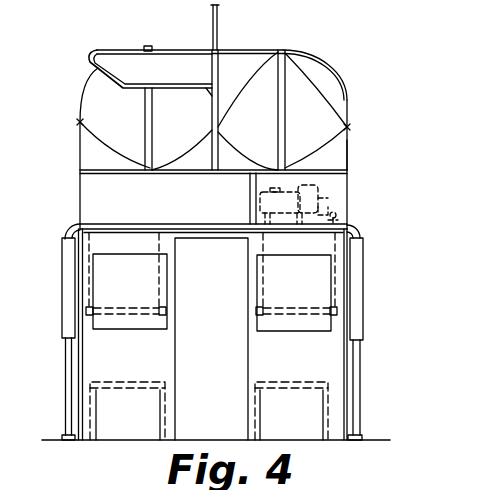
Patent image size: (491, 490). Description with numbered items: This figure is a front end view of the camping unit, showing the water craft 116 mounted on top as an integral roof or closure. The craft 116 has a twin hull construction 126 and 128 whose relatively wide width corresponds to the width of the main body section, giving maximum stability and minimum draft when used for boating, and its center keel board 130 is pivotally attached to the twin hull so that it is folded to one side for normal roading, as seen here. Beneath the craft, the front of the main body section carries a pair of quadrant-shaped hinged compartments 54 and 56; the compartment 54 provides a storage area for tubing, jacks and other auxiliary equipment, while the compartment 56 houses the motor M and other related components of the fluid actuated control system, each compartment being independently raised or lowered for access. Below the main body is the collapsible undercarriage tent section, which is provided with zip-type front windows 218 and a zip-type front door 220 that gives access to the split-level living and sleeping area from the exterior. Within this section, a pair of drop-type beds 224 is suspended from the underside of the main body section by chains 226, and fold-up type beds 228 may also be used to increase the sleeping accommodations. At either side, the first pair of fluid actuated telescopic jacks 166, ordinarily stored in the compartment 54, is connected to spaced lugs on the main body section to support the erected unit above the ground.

The water craft 116 is at (349, 72).
The twin hull 126 is at (82, 123).
The twin hull 128 is at (318, 133).
The center keel board 130 is at (211, 24).
The compartment 56 is at (333, 158).
The compartment 54 is at (88, 188).
The motor M is at (328, 198).
The front door 220 is at (223, 370).
The chains 226 is at (160, 289).
The front windows 218 is at (128, 330).
The drop-type beds 224 is at (167, 315).
The fold-up type beds 228 is at (247, 402).
The telescopic jacks 166 is at (64, 390).